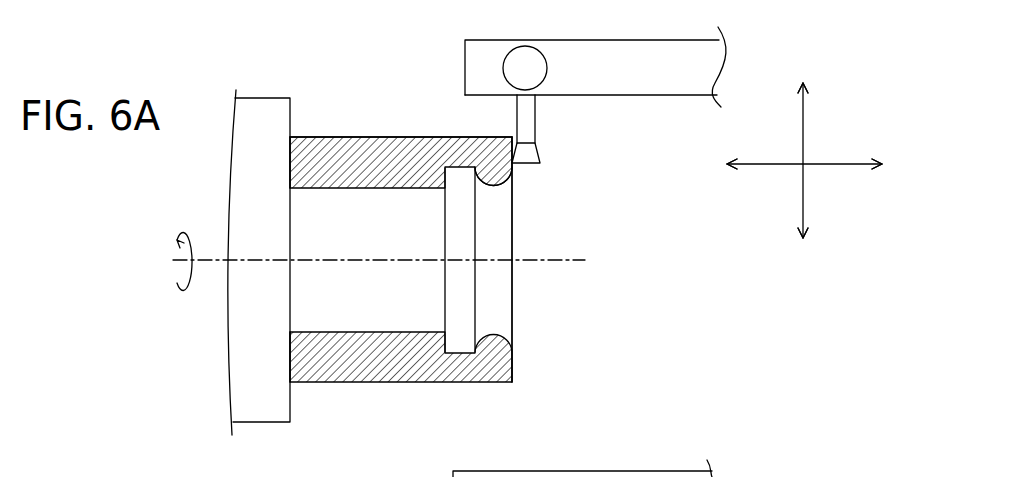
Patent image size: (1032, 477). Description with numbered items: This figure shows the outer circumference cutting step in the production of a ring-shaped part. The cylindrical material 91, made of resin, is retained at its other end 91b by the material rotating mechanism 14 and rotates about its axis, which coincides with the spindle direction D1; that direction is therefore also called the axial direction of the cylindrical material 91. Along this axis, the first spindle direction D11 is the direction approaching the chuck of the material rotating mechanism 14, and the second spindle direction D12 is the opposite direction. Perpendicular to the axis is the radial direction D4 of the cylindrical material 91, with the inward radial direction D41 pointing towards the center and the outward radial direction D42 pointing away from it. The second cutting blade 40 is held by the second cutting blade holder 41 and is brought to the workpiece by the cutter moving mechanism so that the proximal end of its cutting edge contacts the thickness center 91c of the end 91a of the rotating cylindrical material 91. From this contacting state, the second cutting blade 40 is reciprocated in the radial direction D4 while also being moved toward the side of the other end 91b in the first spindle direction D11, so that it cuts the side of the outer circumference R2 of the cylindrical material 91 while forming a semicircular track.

The material rotating mechanism 14 is at (290, 130).
The outer circumference R2 is at (368, 137).
The second cutting blade holder 41 is at (613, 48).
The second cutting blade 40 is at (535, 132).
The cylindrical material 91 is at (420, 382).
The end 91a is at (512, 358).
The other end 91b is at (290, 354).
The thickness center 91c is at (512, 163).
The spindle direction D1 is at (838, 167).
The first spindle direction D11 is at (710, 165).
The second spindle direction D12 is at (900, 165).
The radial direction D4 is at (803, 120).
The outward radial direction D42 is at (802, 75).
The inward radial direction D41 is at (802, 250).